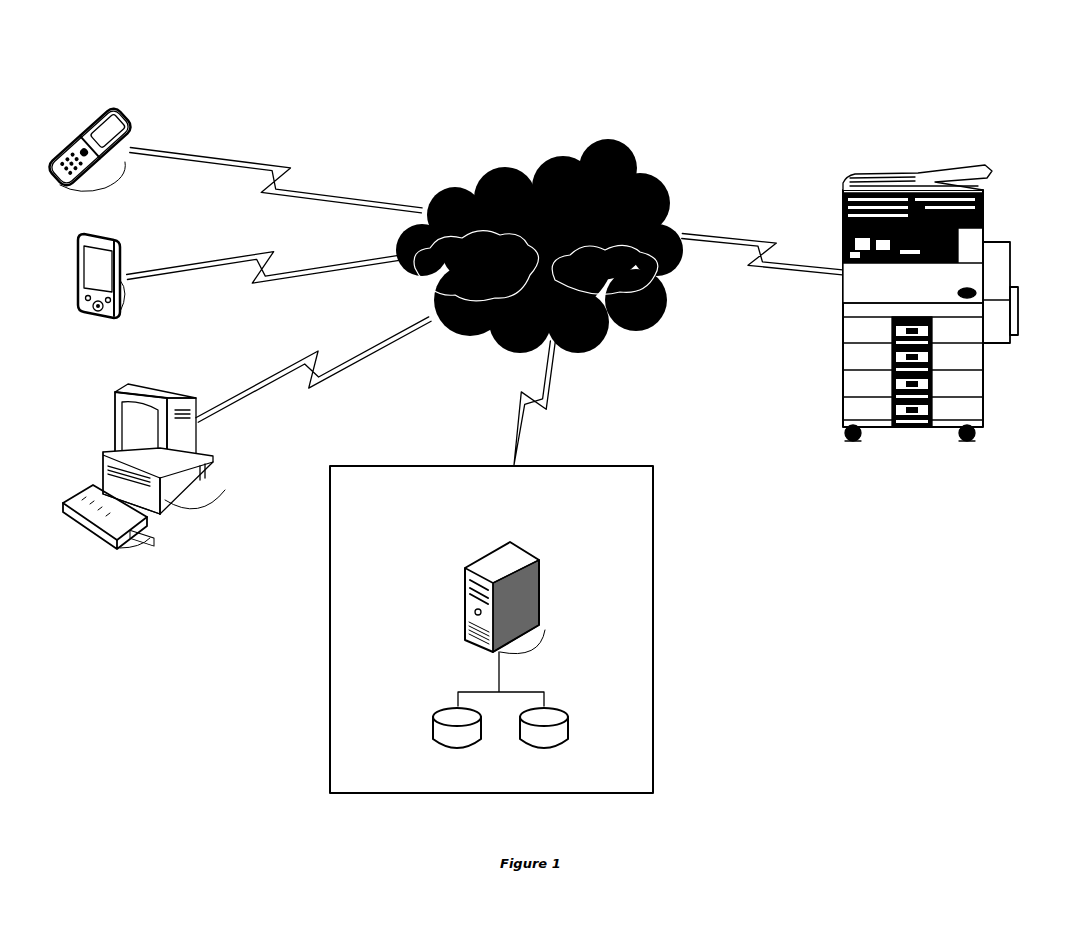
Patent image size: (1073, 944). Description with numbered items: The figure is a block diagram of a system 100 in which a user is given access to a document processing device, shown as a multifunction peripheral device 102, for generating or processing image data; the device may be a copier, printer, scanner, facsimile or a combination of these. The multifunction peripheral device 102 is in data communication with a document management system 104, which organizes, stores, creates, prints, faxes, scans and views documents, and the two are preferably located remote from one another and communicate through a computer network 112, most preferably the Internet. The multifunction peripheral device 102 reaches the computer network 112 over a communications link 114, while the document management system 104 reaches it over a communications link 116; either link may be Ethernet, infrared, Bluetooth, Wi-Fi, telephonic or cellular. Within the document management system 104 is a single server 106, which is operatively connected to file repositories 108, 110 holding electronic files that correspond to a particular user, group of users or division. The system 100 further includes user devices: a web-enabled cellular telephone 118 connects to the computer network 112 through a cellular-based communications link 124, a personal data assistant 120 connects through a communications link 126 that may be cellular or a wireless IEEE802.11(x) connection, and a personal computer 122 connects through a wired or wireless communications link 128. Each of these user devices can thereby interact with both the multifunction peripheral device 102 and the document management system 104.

The system 100 is at (748, 70).
The multifunction peripheral device 102 is at (990, 210).
The document management system 104 is at (653, 498).
The server 106 is at (539, 553).
The file repository 108 is at (444, 707).
The file repository 110 is at (558, 704).
The computer network 112 is at (620, 141).
The communications link 114 is at (756, 243).
The communications link 116 is at (546, 407).
The web-enabled cellular telephone 118 is at (110, 108).
The personal data assistant 120 is at (114, 243).
The personal computer 122 is at (175, 400).
The communications link 124 is at (287, 168).
The communications link 126 is at (188, 266).
The communications link 128 is at (304, 356).